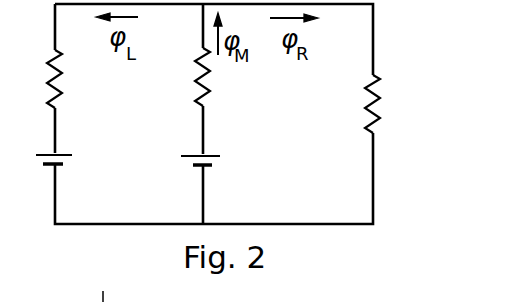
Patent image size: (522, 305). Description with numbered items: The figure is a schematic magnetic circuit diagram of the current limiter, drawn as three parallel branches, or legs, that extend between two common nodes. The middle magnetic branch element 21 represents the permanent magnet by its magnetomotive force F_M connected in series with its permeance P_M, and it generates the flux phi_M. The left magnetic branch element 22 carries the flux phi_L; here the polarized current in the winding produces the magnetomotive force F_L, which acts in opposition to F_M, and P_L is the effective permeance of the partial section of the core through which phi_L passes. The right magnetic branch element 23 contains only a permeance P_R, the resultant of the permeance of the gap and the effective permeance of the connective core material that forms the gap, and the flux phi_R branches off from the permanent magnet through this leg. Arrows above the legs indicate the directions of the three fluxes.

The magnetic branch element 21 is at (197, 118).
The magnetic branch element 22 is at (52, 119).
The magnetic branch element 23 is at (378, 125).